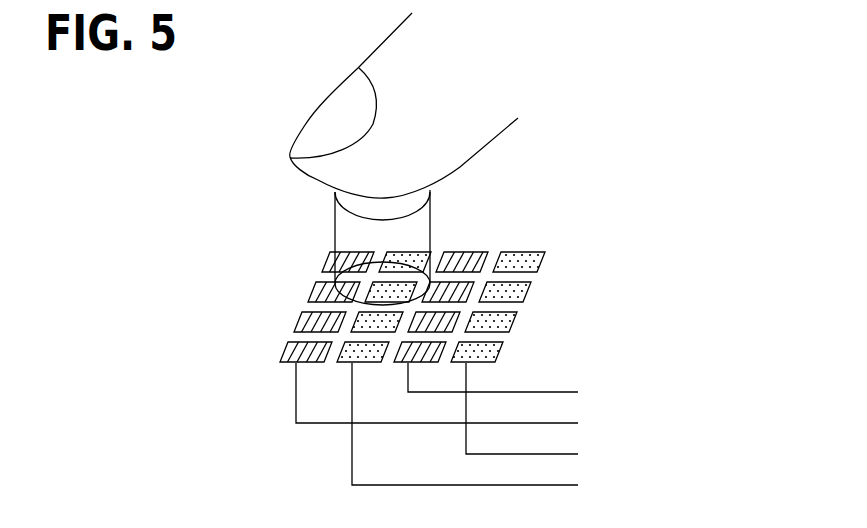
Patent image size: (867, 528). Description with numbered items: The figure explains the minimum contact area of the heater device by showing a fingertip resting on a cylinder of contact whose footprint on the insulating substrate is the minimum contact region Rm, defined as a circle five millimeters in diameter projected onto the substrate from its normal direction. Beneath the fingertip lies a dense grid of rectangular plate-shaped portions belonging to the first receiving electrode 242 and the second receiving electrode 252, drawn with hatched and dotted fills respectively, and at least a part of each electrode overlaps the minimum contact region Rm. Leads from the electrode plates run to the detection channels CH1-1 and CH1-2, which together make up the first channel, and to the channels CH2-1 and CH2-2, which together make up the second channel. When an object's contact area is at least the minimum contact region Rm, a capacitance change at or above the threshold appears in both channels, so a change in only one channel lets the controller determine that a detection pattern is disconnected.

The first receiving electrode 242 is at (296, 353).
The second receiving electrode 252 is at (362, 323).
The minimum contact region Rm is at (278, 212).
The channel 1-1 CH1-1 is at (489, 401).
The channel 1-2 CH1-2 is at (545, 386).
The channel 2-1 CH2-1 is at (517, 432).
The channel 2-2 CH2-2 is at (574, 417).